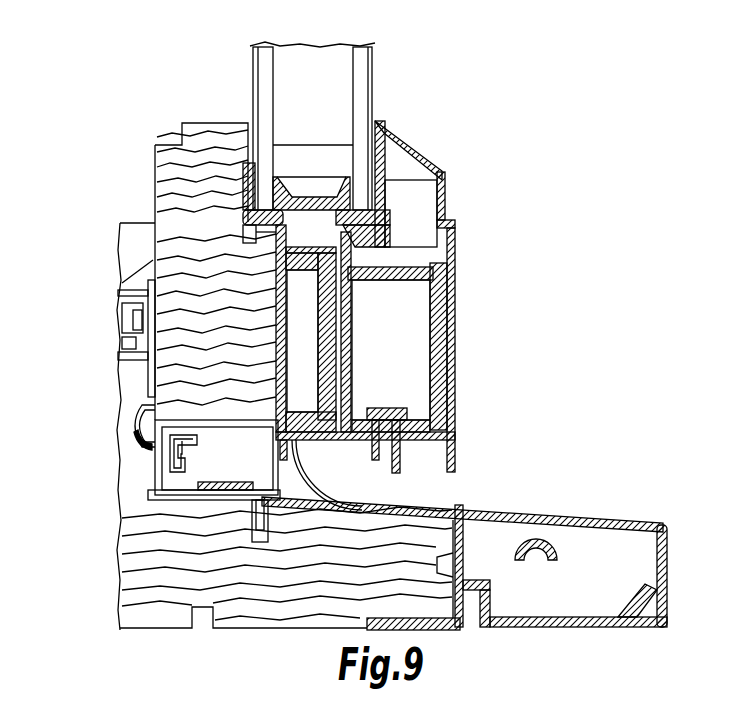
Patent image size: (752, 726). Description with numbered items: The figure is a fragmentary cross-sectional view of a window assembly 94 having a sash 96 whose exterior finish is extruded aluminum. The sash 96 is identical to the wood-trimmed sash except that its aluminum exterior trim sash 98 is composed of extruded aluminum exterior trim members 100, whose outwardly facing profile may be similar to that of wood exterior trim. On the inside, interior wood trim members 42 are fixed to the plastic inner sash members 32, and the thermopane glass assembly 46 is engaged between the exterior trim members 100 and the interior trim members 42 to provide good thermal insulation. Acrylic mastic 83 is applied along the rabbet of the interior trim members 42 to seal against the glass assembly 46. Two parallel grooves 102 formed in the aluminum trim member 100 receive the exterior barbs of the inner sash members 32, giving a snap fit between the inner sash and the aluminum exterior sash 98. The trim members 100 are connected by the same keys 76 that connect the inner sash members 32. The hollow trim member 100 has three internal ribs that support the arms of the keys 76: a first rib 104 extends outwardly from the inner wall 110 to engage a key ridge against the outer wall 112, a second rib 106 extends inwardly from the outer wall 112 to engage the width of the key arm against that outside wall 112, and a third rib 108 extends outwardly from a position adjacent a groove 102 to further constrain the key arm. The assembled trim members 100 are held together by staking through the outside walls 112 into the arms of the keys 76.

The inner sash member 32 is at (304, 243).
The interior trim member 42 is at (155, 183).
The thermopane glass assembly 46 is at (372, 78).
The key 76 is at (320, 347).
The acrylic mastic 83 is at (247, 177).
The window assembly 94 is at (434, 121).
The sash 96 is at (217, 123).
The aluminum exterior trim sash 98 is at (455, 300).
The extruded aluminum exterior trim member 100 is at (423, 163).
The groove 102 is at (374, 252).
The first rib 104 is at (393, 262).
The second rib 106 is at (450, 243).
The third rib 108 is at (402, 407).
The inner wall 110 is at (352, 348).
The outer wall 112 is at (457, 368).